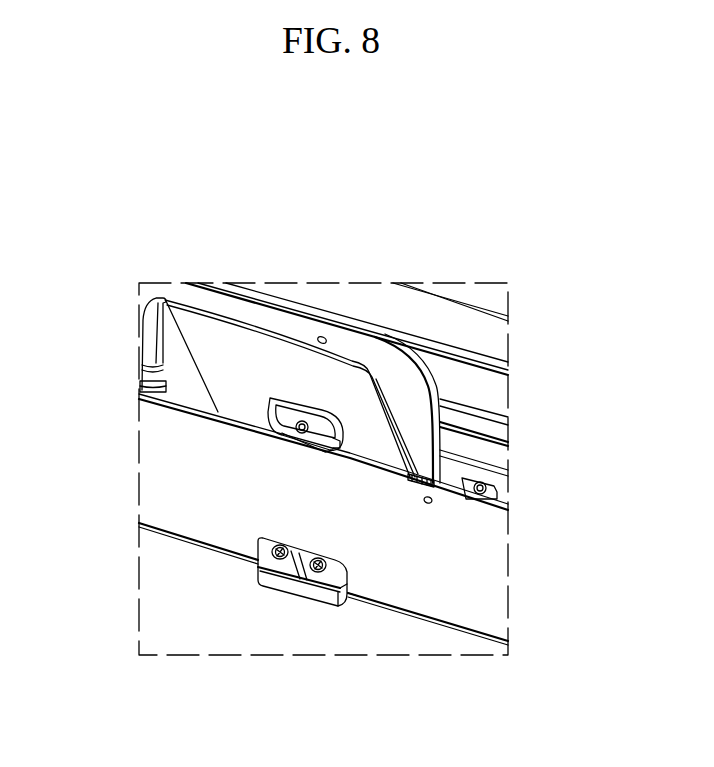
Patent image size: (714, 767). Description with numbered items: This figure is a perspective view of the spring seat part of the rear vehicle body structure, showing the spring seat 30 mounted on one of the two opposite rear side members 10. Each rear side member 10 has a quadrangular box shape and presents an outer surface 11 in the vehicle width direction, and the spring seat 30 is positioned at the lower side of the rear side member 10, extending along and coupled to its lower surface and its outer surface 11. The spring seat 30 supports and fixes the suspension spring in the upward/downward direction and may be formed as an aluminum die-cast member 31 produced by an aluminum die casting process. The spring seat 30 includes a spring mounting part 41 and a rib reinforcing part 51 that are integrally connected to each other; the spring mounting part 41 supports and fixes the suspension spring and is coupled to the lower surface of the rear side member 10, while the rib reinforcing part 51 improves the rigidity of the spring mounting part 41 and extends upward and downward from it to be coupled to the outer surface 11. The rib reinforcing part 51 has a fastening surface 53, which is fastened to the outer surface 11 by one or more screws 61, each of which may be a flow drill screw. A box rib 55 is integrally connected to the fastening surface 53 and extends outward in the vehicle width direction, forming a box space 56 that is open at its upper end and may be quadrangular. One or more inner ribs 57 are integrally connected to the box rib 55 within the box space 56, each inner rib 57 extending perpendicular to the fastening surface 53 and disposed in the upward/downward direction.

The spring seat 30 is at (337, 204).
The rear side member 10 is at (323, 560).
The outer surface 11 is at (458, 603).
The aluminum die-cast member 31 is at (321, 607).
The spring mounting part 41 is at (357, 600).
The rib reinforcing part 51 is at (321, 591).
The fastening surface 53 is at (295, 550).
The box rib 55 is at (272, 587).
The box space 56 is at (258, 567).
The inner rib 57 is at (268, 590).
The screw 61 is at (320, 565).